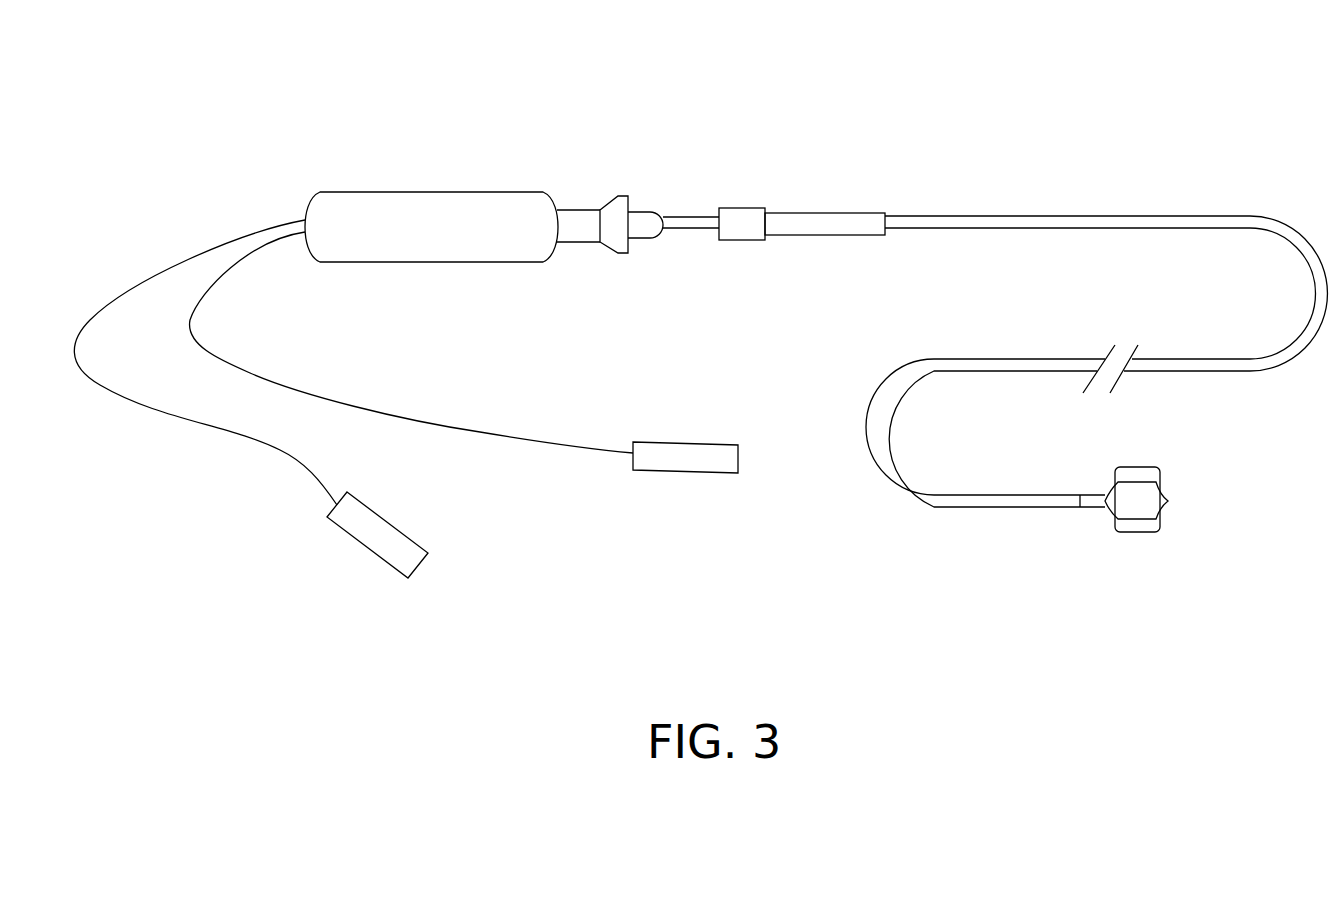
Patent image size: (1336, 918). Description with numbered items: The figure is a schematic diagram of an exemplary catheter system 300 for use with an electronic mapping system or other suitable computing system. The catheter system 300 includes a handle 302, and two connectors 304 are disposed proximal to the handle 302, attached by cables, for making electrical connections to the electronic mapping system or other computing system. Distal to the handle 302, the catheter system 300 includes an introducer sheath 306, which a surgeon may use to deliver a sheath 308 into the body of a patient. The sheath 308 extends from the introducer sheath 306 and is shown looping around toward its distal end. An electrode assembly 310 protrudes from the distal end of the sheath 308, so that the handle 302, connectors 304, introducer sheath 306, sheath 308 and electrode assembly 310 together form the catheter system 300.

The catheter system 300 is at (1107, 108).
The handle 302 is at (447, 207).
The connectors 304 is at (393, 550).
The introducer sheath 306 is at (843, 222).
The sheath 308 is at (1175, 218).
The electrode assembly 310 is at (1150, 530).